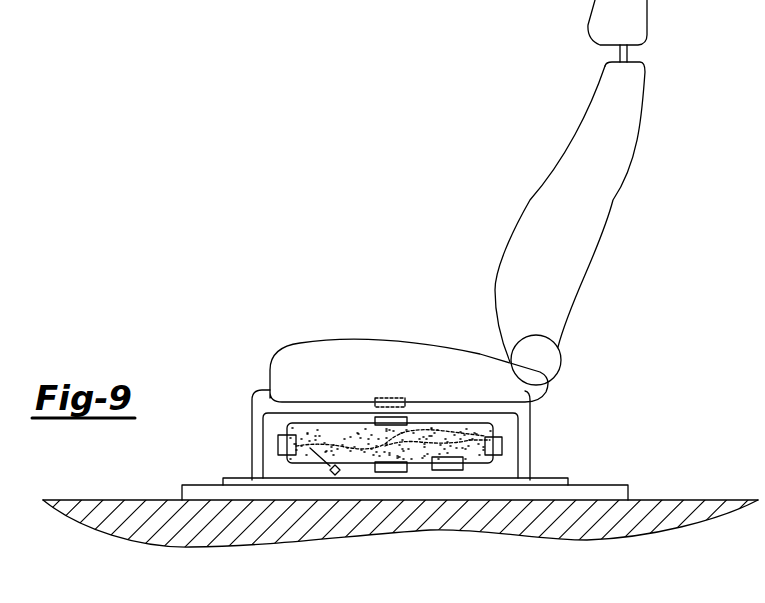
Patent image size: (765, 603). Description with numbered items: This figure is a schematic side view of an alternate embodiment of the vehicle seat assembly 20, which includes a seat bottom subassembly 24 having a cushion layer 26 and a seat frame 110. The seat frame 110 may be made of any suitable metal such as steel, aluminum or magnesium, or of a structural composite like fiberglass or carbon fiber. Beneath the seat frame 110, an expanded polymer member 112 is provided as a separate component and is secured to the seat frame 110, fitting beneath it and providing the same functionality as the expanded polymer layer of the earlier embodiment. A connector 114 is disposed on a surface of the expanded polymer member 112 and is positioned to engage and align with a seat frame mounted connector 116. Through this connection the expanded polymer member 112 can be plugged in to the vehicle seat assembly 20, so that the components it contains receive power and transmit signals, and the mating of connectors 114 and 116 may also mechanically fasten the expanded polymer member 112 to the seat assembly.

The vehicle seat assembly 20 is at (528, 116).
The seat bottom subassembly 24 is at (368, 316).
The cushion layer 26 is at (270, 362).
The seat frame 110 is at (257, 390).
The expanded polymer member 112 is at (350, 463).
The connector 114 is at (393, 410).
The seat frame mounted connector 116 is at (278, 447).